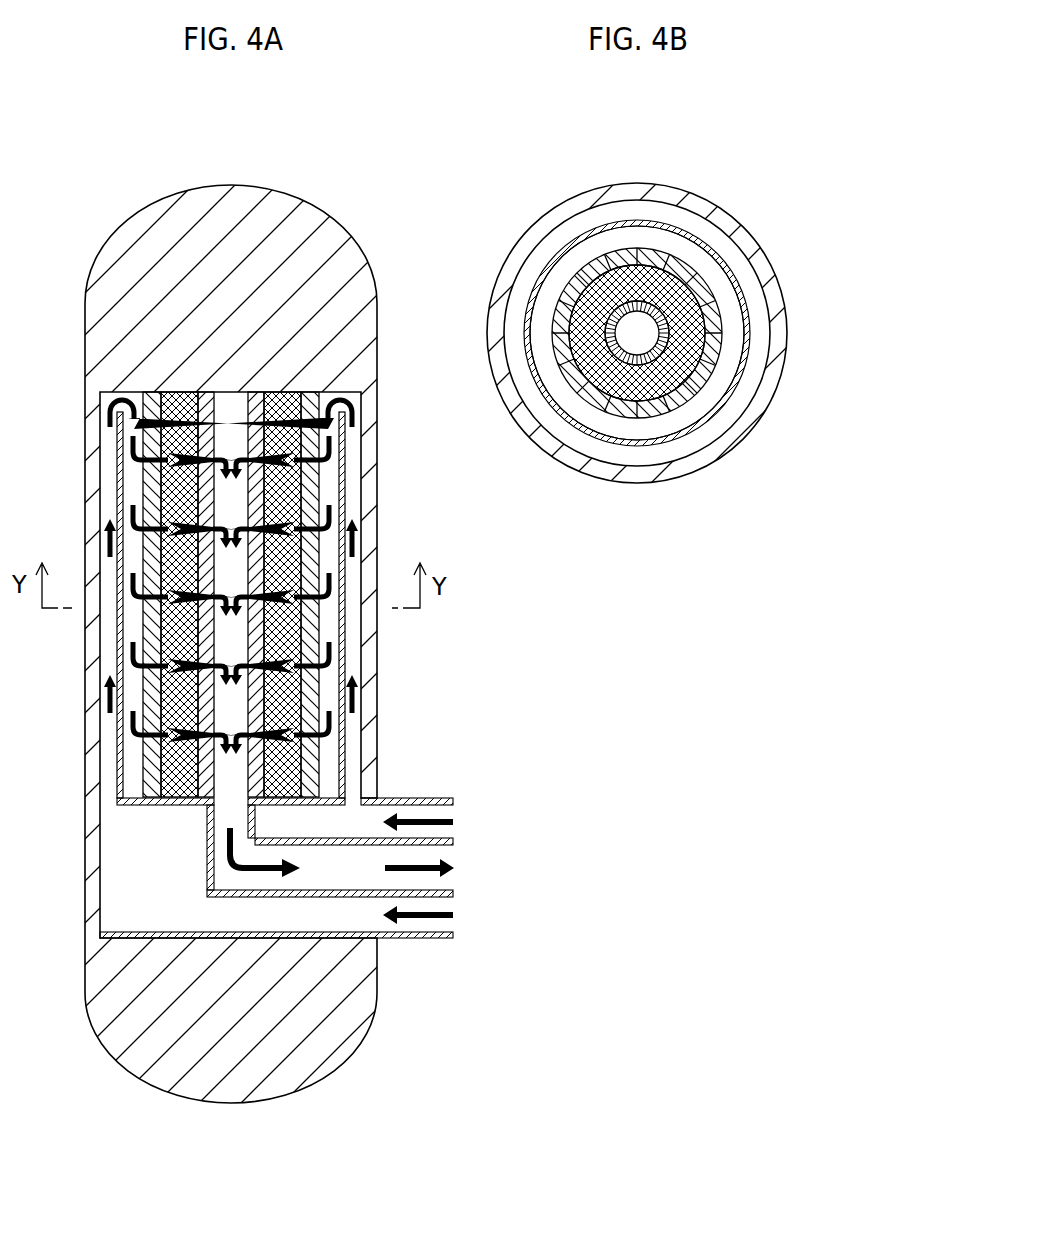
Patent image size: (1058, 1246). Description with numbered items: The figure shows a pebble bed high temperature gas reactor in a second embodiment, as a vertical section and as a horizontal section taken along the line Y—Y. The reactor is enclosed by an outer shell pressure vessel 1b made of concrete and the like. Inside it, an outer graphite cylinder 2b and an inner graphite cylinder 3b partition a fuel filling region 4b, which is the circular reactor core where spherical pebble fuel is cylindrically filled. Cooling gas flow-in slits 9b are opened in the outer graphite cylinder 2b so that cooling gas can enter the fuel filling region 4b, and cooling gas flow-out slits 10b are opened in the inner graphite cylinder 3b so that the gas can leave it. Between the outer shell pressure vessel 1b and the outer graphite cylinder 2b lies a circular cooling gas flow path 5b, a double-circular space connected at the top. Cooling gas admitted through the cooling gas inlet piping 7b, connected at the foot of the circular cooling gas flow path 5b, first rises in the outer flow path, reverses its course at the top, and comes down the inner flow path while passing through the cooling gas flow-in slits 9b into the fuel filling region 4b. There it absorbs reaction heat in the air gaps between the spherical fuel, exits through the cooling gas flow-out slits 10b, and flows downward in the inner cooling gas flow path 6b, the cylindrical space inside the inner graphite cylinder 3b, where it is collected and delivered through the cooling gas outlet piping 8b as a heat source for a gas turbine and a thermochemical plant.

In FIG. 4A, the outer shell pressure vessel 1b is at (263, 203).
In FIG. 4B, the outer shell pressure vessel 1b is at (655, 188).
In FIG. 4A, the outer graphite cylinder 2b is at (313, 652).
In FIG. 4B, the outer graphite cylinder 2b is at (718, 368).
In FIG. 4A, the inner graphite cylinder 3b is at (261, 392).
In FIG. 4B, the inner graphite cylinder 3b is at (680, 255).
In FIG. 4A, the fuel filling region 4b is at (292, 385).
In FIG. 4B, the fuel filling region 4b is at (720, 317).
In FIG. 4A, the circular cooling gas flow path 5b is at (355, 740).
In FIG. 4B, the circular cooling gas flow path 5b is at (717, 425).
In FIG. 4A, the inner cooling gas flow path 6b is at (228, 403).
In FIG. 4B, the inner cooling gas flow path 6b is at (562, 283).
In FIG. 4A, the cooling gas inlet piping 7b is at (430, 830).
In FIG. 4A, the cooling gas outlet piping 8b is at (430, 876).
In FIG. 4B, the cooling gas flow-in slits 9b is at (600, 252).
In FIG. 4B, the cooling gas flow-out slits 10b is at (627, 317).